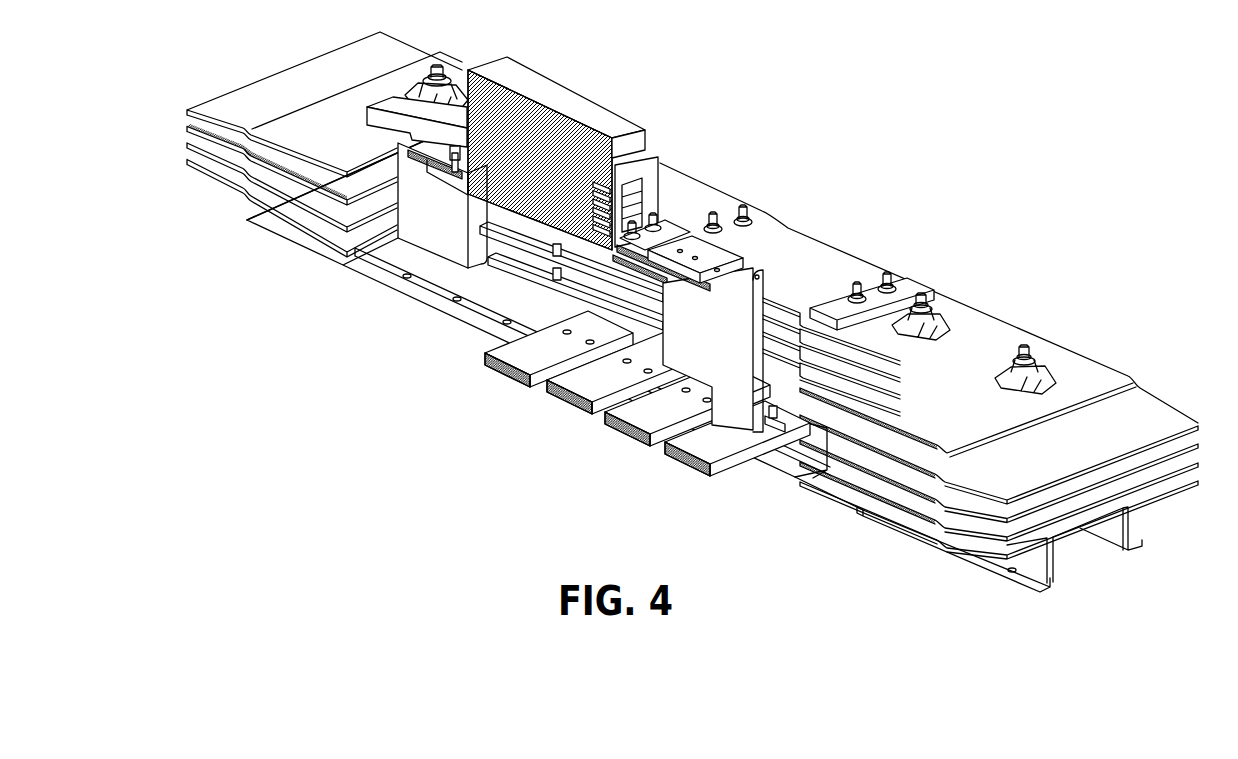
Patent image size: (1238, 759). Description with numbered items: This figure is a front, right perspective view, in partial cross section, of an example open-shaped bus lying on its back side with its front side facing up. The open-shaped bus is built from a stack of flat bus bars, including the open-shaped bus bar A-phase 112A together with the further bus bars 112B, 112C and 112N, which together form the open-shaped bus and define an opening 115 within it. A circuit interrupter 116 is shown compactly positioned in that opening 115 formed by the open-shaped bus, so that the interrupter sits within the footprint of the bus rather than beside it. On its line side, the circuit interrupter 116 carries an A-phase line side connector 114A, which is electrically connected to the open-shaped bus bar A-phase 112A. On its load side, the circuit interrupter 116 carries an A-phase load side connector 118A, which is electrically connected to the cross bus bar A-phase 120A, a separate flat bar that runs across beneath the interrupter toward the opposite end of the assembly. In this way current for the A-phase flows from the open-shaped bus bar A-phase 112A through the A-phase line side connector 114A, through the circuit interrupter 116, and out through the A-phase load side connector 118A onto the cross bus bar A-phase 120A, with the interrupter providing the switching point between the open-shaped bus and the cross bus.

The open-shaped bus bar A-phase 112A is at (187, 162).
The battery cell 112B is at (187, 145).
The battery cell 112C is at (187, 127).
The battery cell 112N is at (187, 112).
The A-phase line side connector 114A is at (428, 234).
The opening 115 is at (793, 474).
The circuit interrupter 116 is at (555, 98).
The A-phase load side connector 118A is at (737, 408).
The cross bus bar A-phase 120A is at (668, 457).